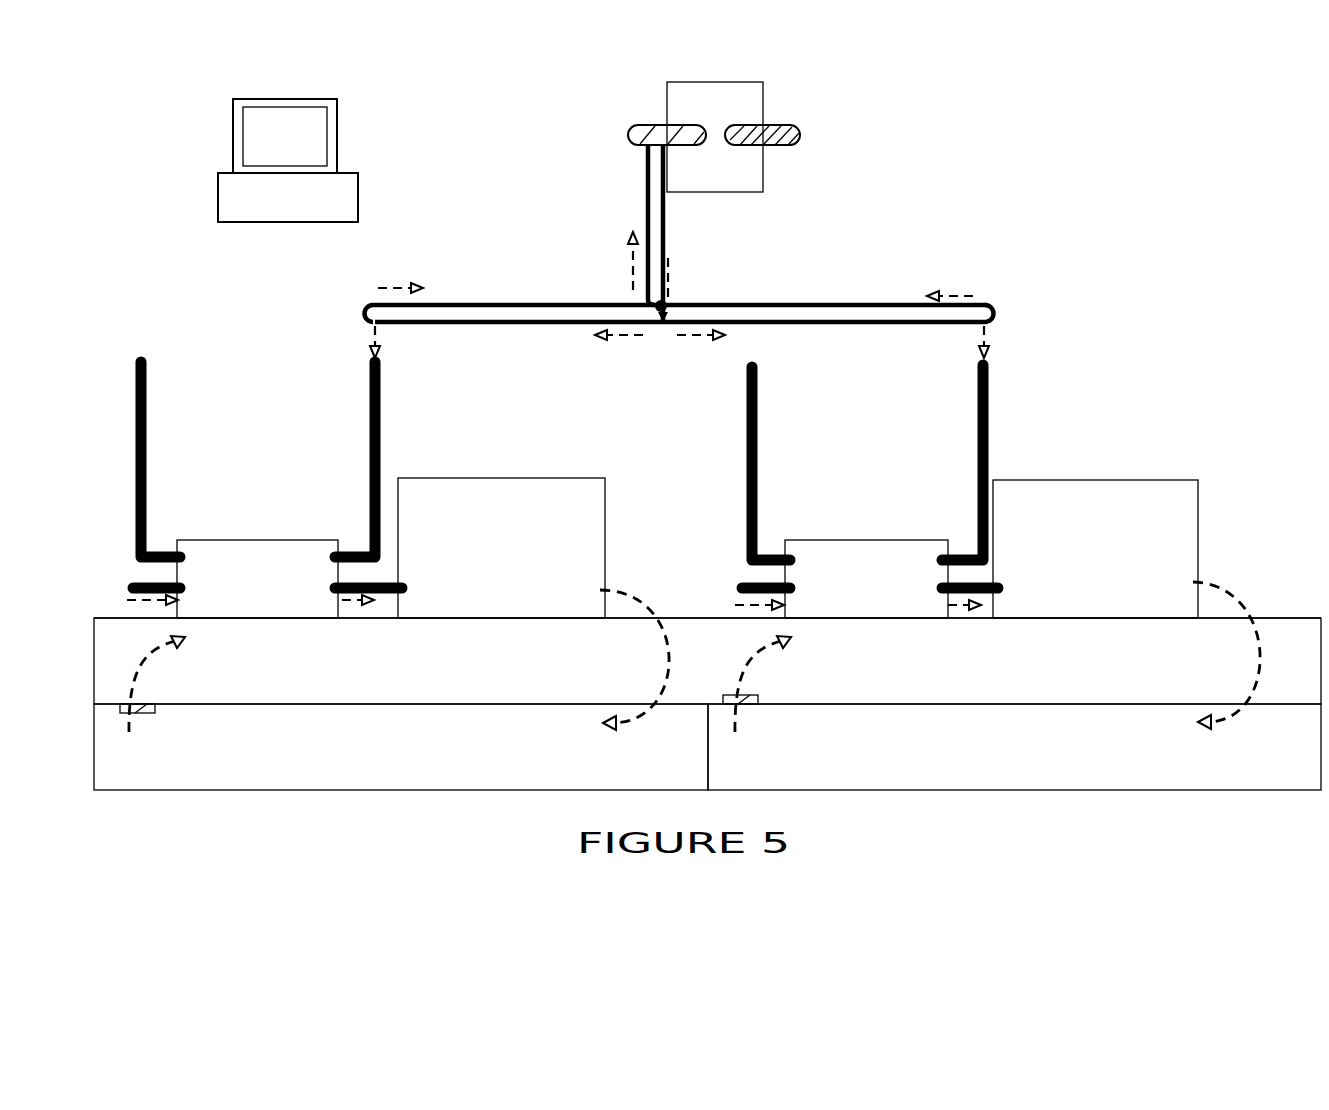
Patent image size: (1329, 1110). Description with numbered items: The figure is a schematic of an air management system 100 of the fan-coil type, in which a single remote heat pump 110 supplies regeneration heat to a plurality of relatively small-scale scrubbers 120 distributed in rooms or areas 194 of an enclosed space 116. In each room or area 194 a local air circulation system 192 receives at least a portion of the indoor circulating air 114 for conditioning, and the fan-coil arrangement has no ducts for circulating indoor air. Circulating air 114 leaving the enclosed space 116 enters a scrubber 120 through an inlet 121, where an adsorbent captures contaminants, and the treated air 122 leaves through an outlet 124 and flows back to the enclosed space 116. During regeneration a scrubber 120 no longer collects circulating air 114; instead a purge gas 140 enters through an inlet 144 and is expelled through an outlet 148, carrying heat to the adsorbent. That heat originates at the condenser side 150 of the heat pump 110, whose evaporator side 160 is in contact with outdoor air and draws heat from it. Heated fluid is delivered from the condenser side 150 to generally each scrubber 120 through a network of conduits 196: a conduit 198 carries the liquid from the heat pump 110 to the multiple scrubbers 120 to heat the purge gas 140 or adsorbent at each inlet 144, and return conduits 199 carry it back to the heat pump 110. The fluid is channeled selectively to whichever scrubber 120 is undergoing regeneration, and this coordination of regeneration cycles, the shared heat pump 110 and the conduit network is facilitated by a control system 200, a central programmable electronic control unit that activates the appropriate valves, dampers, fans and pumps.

The air management system 100 is at (1286, 150).
The heat pump 110 is at (708, 193).
The circulating air 114 is at (135, 677).
The enclosed space 116 is at (1320, 618).
The scrubber 120 is at (240, 540).
The inlet 121 is at (152, 578).
The treated air 122 is at (357, 592).
The outlet 124 is at (333, 574).
The purge gas 140 is at (378, 348).
The inlet 144 is at (358, 553).
The outlet 148 is at (158, 553).
The condenser side 150 is at (640, 125).
The evaporator side 160 is at (780, 144).
The local air circulation system 192 is at (508, 478).
The room or area 194 is at (395, 790).
The network of conduits 196 is at (543, 238).
The conduit 198 is at (795, 324).
The return conduit 199 is at (873, 302).
The control system 200 is at (397, 132).